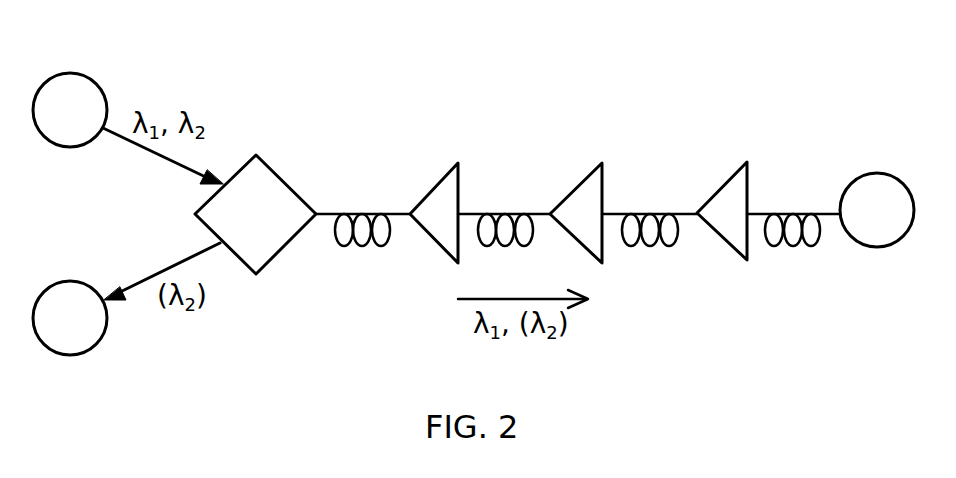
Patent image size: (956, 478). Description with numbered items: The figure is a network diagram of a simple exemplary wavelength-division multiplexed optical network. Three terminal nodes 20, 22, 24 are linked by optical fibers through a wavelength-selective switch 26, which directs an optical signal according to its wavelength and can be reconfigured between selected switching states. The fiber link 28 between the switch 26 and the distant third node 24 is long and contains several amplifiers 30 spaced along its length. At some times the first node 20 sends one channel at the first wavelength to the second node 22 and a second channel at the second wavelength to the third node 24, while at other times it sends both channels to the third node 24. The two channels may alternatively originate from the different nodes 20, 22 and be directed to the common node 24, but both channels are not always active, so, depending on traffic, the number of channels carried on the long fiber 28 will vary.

The first terminal node 20 is at (86, 88).
The second terminal node 22 is at (87, 296).
The third terminal node 24 is at (870, 185).
The wavelength-selective switch 26 is at (277, 190).
The fiber link 28 is at (331, 208).
The amplifiers 30 is at (441, 180).